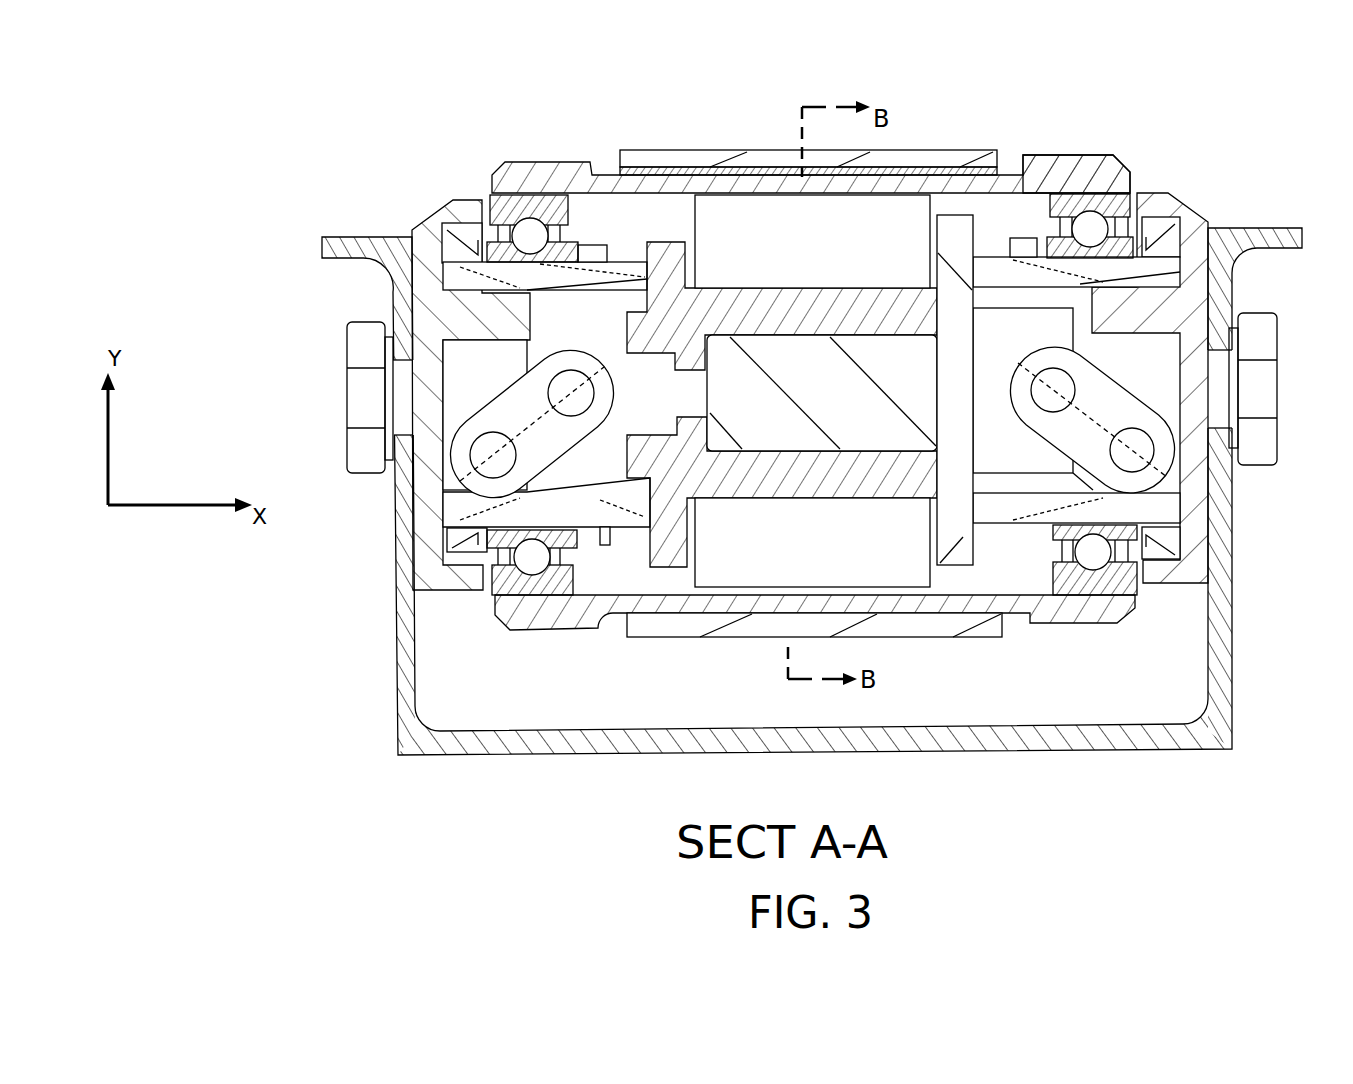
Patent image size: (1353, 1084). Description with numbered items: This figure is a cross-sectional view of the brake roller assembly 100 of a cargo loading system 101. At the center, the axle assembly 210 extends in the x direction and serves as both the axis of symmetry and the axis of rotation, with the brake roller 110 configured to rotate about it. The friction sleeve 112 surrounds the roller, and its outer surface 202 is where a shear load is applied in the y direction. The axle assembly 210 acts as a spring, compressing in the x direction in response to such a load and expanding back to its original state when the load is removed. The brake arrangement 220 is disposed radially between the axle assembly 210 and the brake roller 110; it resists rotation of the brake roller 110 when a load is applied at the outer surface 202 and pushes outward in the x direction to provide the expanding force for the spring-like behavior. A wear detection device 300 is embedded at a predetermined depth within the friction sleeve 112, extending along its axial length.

The brake roller assembly 100 is at (750, 409).
The cargo loading system 101 is at (338, 158).
The brake roller 110 is at (782, 366).
The friction sleeve 112 is at (997, 150).
The outer surface 202 is at (717, 148).
The wear detection device 300 is at (647, 170).
The axle assembly 210 is at (676, 295).
The brake arrangement 220 is at (812, 391).